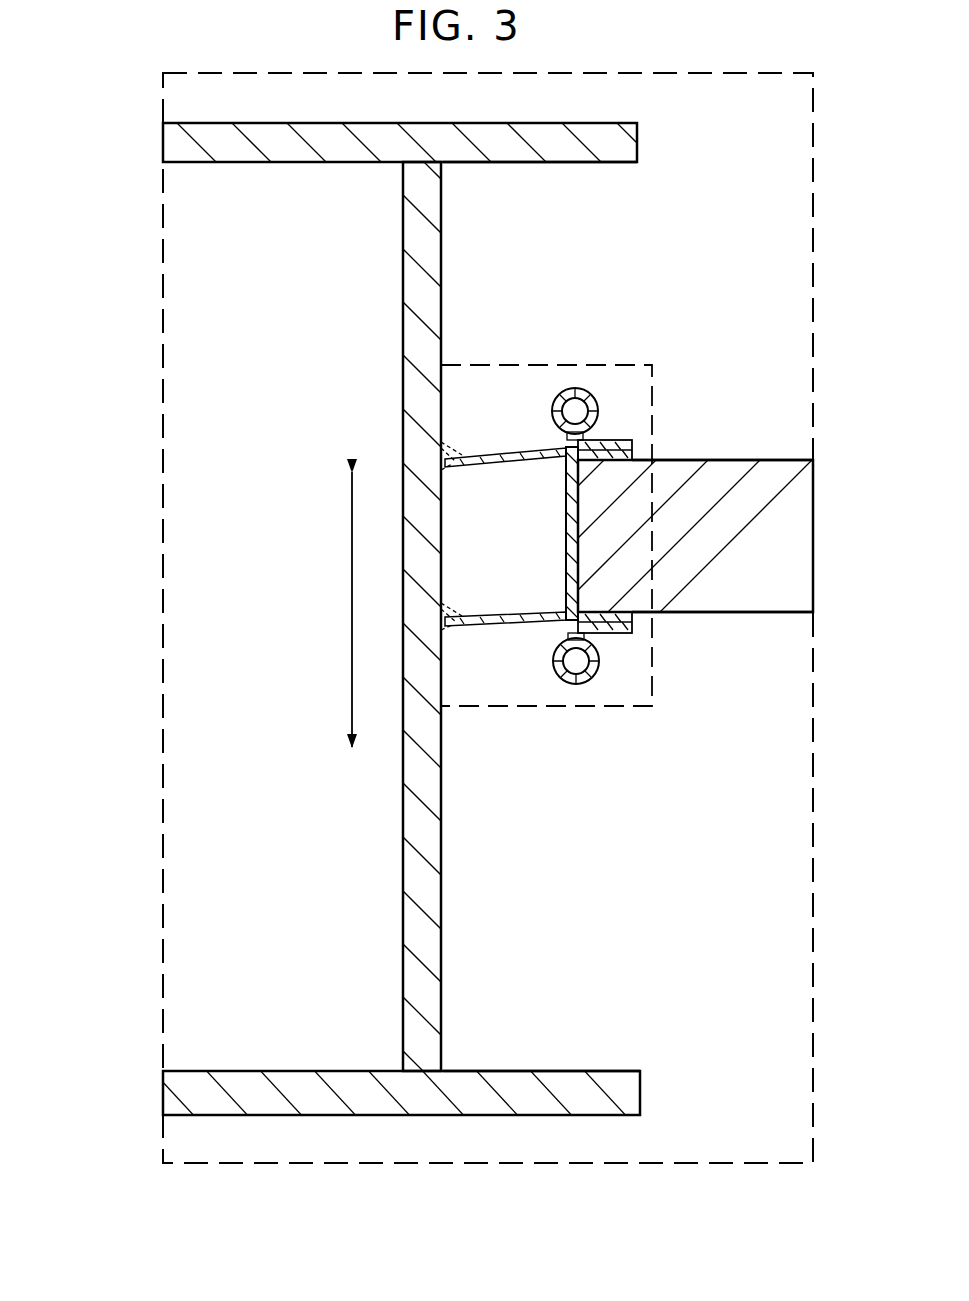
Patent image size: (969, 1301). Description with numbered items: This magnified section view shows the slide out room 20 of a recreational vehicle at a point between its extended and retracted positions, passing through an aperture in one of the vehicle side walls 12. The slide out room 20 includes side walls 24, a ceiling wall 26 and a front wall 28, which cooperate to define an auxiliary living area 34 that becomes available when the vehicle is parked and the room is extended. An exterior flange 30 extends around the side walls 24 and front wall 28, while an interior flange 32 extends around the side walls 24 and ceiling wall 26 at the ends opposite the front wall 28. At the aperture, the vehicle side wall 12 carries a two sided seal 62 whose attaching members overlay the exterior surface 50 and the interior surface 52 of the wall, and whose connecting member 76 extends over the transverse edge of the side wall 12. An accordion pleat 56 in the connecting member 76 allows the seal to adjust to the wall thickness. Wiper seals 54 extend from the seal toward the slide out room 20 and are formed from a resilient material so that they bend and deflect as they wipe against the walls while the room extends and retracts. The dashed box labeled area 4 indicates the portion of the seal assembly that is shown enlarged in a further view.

The slide out room 20 is at (192, 878).
The side walls 24 is at (403, 333).
The ceiling wall 26 is at (288, 155).
The front wall 28 is at (370, 1105).
The exterior flange 30 is at (523, 1080).
The interior flange 32 is at (558, 150).
The auxiliary living area 34 is at (280, 623).
The area 4 is at (622, 366).
The side wall 12 is at (770, 583).
The exterior surface 50 is at (690, 612).
The interior surface 52 is at (780, 460).
The wiper seals 54 is at (496, 450).
The accordion pleat 56 is at (560, 537).
The two sided seal 62 is at (536, 658).
The connecting member 76 is at (545, 521).